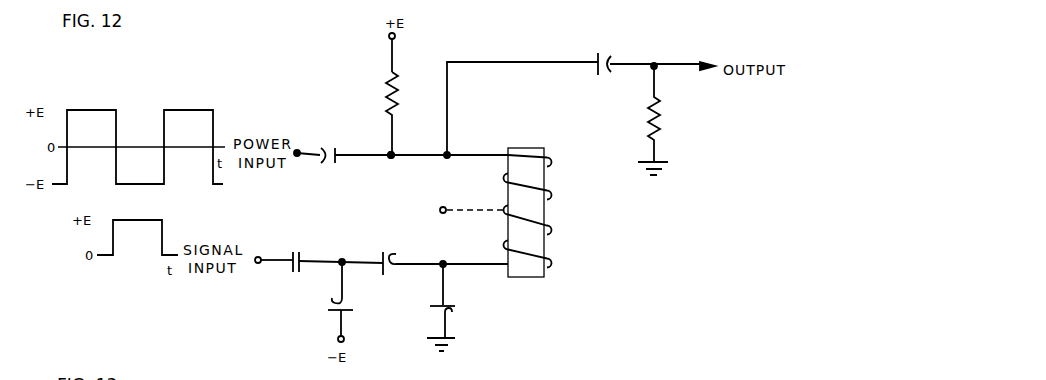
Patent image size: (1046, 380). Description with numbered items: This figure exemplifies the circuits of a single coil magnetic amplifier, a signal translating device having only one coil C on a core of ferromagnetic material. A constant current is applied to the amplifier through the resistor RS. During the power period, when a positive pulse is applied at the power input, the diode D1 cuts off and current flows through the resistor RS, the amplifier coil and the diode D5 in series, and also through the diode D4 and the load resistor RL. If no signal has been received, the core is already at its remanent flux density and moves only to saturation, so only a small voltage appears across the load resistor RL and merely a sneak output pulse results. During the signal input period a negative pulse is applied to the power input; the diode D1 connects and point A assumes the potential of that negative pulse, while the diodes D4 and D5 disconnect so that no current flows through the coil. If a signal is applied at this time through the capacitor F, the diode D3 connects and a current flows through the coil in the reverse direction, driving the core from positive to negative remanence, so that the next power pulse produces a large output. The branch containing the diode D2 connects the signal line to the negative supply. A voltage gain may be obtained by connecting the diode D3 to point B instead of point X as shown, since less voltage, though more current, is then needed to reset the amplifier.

The diode D1 is at (333, 143).
The diode D2 is at (327, 299).
The diode D3 is at (390, 256).
The diode D4 is at (603, 54).
The diode D5 is at (431, 307).
The capacitor F is at (295, 253).
The resistor RS is at (402, 113).
The load resistor RL is at (659, 120).
The point A is at (390, 165).
The point B is at (465, 210).
The coil C is at (526, 272).
The point X is at (442, 256).